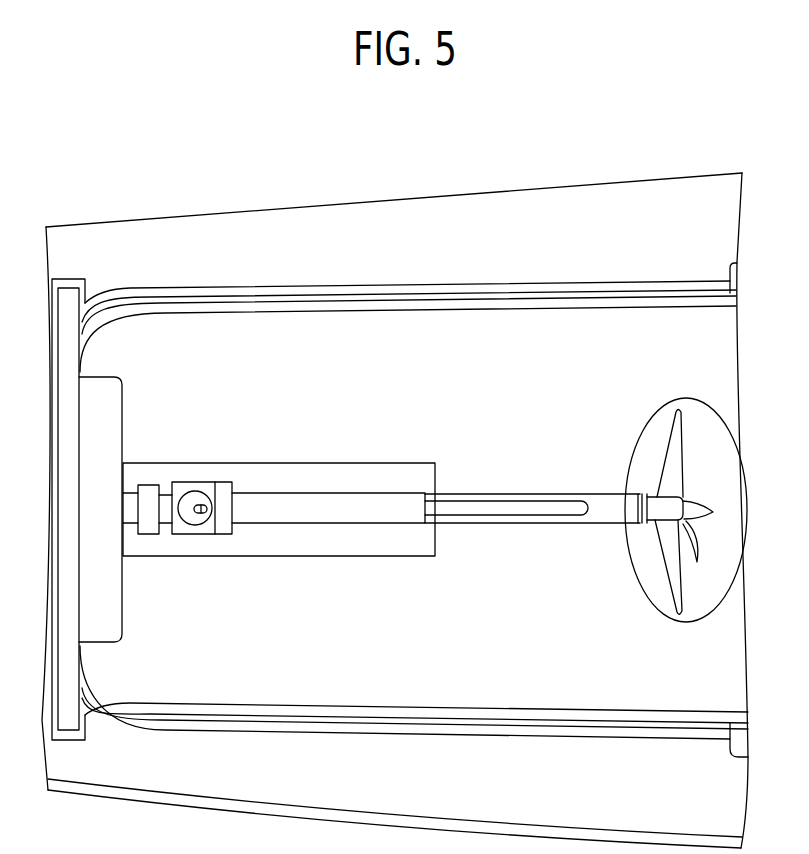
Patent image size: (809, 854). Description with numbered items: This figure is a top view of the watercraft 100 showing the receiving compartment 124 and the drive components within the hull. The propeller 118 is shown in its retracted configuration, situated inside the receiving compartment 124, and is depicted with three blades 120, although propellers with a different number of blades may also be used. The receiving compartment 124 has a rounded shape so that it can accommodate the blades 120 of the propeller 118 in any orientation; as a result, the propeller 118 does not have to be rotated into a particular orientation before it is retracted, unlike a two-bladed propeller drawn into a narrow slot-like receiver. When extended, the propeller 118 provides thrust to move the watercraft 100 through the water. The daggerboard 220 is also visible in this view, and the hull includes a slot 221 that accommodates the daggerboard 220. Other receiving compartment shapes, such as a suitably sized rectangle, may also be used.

The watercraft 100 is at (508, 144).
The propeller 118 is at (706, 496).
The blades 120 is at (673, 471).
The receiving compartment 124 is at (725, 513).
The daggerboard 220 is at (467, 507).
The slot 221 is at (468, 520).